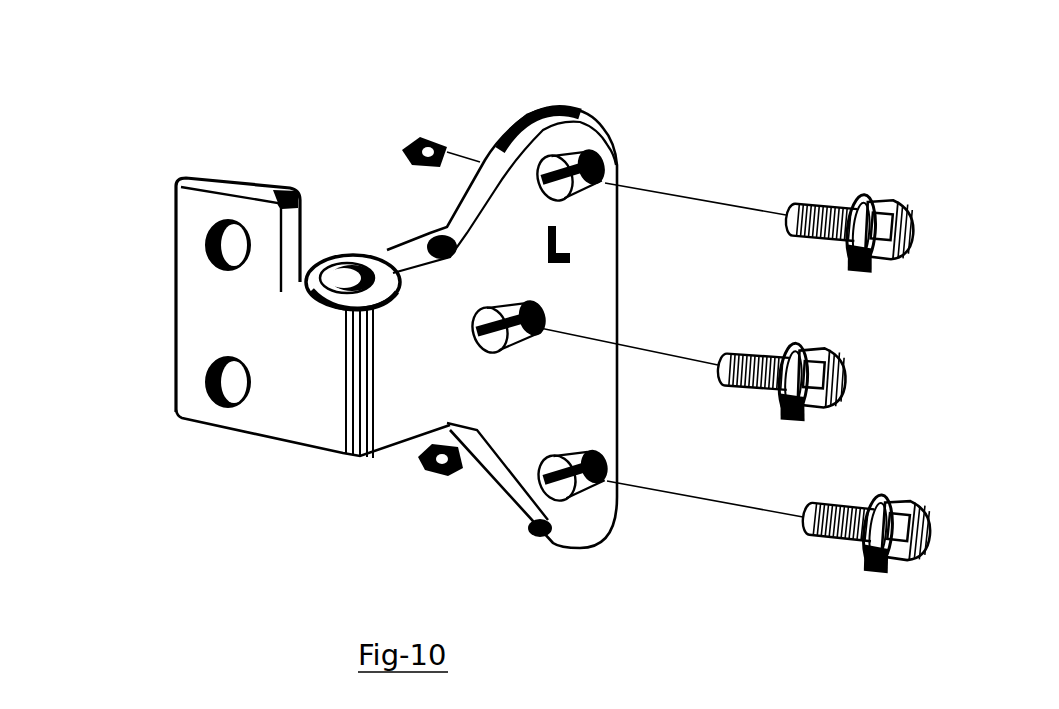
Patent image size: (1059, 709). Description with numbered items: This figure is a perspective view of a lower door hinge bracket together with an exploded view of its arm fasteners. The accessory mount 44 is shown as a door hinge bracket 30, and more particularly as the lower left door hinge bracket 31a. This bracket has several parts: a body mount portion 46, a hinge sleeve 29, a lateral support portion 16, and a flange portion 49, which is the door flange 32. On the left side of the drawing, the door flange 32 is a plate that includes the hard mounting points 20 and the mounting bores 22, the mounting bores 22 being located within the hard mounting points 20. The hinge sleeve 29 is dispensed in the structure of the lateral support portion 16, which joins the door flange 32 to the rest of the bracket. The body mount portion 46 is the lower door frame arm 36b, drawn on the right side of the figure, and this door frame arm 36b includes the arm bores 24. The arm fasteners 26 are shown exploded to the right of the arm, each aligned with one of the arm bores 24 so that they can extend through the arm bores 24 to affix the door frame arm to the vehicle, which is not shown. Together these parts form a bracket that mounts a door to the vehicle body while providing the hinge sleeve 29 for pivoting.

The lateral support portion 16 is at (320, 423).
The hard mounting points 20 is at (251, 347).
The mounting bores 22 is at (220, 262).
The arm bores 24 is at (600, 162).
The arm fasteners 26 is at (863, 195).
The hinge sleeve 29 is at (289, 337).
The door hinge bracket 30 is at (207, 158).
The lower left door hinge bracket 31a is at (245, 272).
The door flange 32 is at (120, 288).
The lower door frame arm 36b is at (472, 407).
The accessory mount 44 is at (245, 272).
The body mount portion 46 is at (505, 407).
The flange portion 49 is at (265, 317).